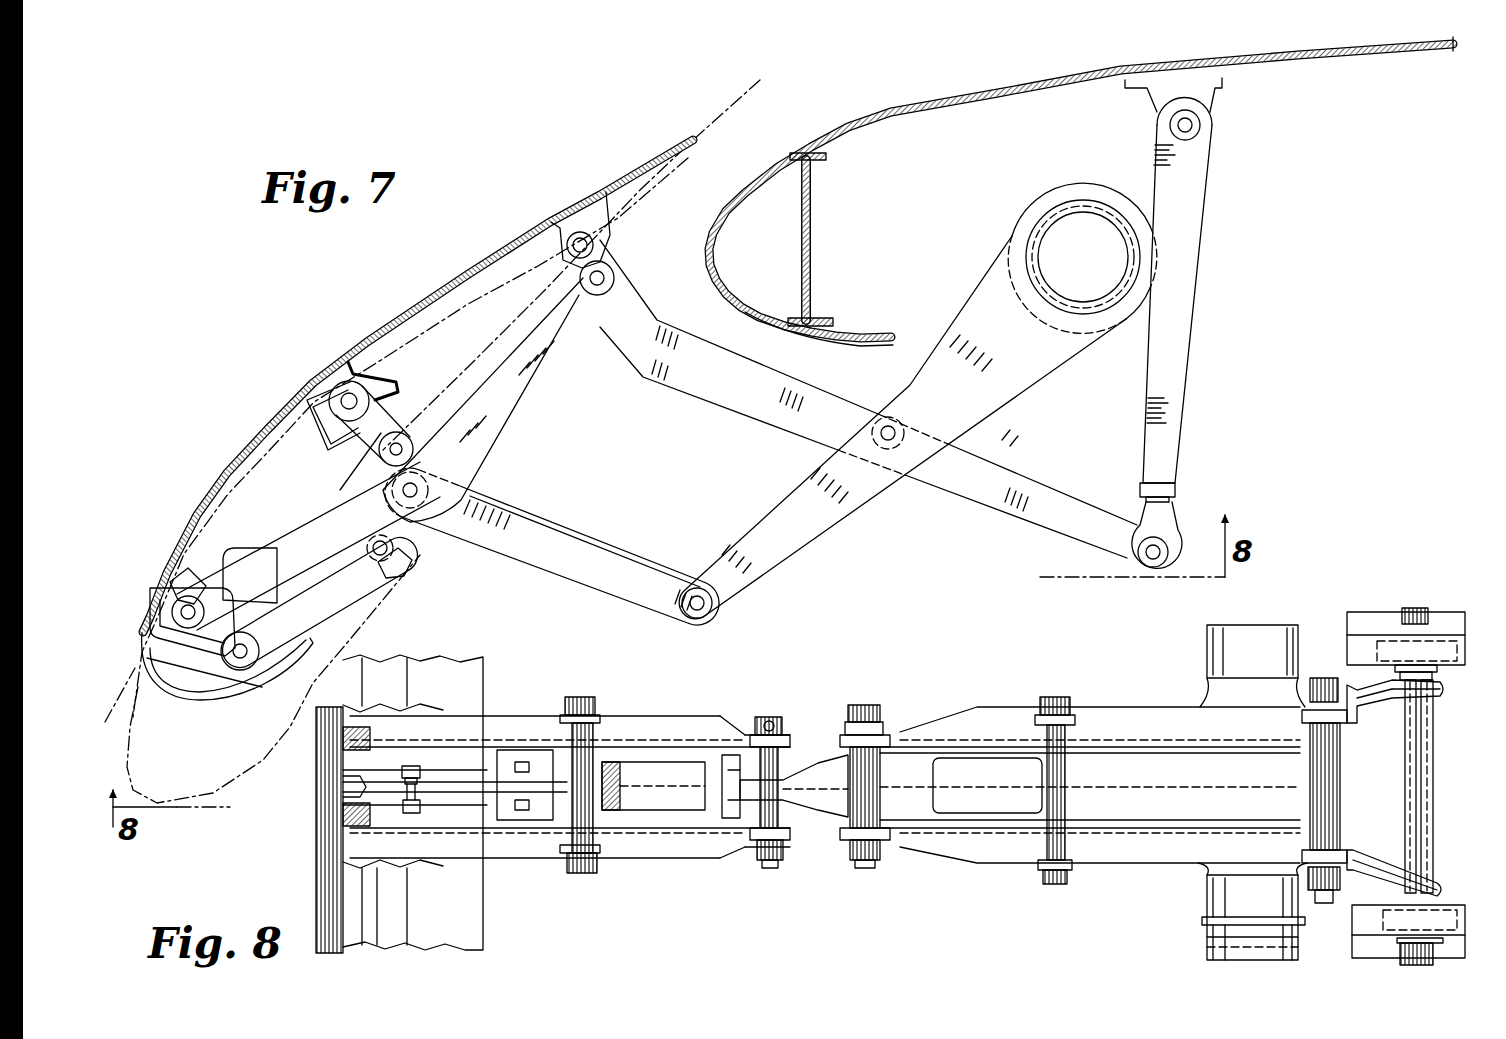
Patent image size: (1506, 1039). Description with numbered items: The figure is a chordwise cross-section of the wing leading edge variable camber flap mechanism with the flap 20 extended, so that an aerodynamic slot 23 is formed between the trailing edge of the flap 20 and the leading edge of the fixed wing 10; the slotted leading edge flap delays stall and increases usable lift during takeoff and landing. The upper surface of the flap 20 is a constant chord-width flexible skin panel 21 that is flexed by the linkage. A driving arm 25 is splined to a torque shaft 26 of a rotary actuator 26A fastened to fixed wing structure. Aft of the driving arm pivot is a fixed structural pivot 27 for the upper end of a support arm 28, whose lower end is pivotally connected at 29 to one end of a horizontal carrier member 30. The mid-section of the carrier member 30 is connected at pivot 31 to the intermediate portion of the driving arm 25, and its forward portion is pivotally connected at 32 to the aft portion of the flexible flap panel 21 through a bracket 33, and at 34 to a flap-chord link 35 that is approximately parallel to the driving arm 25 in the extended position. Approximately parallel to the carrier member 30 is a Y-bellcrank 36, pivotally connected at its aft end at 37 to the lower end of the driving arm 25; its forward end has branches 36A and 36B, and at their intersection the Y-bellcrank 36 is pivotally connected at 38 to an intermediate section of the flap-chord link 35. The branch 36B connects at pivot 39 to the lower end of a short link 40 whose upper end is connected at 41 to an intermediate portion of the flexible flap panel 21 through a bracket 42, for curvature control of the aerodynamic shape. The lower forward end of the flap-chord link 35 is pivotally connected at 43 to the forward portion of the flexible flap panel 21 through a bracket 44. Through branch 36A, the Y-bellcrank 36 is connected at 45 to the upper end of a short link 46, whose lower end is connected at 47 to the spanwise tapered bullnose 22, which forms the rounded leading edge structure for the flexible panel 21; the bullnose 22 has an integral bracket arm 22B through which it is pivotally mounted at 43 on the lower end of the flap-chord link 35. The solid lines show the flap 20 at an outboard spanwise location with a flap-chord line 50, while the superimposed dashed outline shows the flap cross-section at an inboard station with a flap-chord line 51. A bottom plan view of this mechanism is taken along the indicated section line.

In FIG. 7, the fixed wing 10 is at (1143, 68).
In FIG. 7, the flap 20 is at (278, 378).
In FIG. 7, the flexible skin panel 21 is at (372, 330).
In FIG. 7, the bullnose 22 is at (185, 682).
In FIG. 8, the bullnose 22 is at (350, 897).
In FIG. 7, the bracket arm 22B is at (295, 559).
In FIG. 8, the bracket arm 22B is at (345, 786).
In FIG. 7, the aerodynamic slot 23 is at (750, 126).
In FIG. 7, the driving arm 25 is at (987, 318).
In FIG. 8, the driving arm 25 is at (1177, 706).
In FIG. 7, the torque shaft 26 is at (1098, 273).
In FIG. 8, the torque shaft 26 is at (1240, 623).
In FIG. 7, the rotary actuator 26A is at (1056, 186).
In FIG. 7, the fixed structural pivot 27 is at (1168, 125).
In FIG. 8, the fixed structural pivot 27 is at (1412, 606).
In FIG. 7, the support arm 28 is at (1160, 160).
In FIG. 8, the support arm 28 is at (1370, 850).
In FIG. 7, the pivot 29 is at (1170, 553).
In FIG. 8, the pivot 29 is at (1320, 676).
In FIG. 7, the carrier member 30 is at (1032, 520).
In FIG. 8, the carrier member 30 is at (1140, 760).
In FIG. 7, the pivot 31 is at (890, 450).
In FIG. 8, the pivot 31 is at (1056, 697).
In FIG. 7, the pivot 32 is at (593, 246).
In FIG. 8, the pivot 32 is at (760, 722).
In FIG. 7, the bracket 33 is at (600, 192).
In FIG. 8, the bracket 33 is at (728, 755).
In FIG. 7, the pivot 34 is at (614, 278).
In FIG. 8, the pivot 34 is at (772, 718).
In FIG. 7, the flap-chord link 35 is at (513, 410).
In FIG. 8, the flap-chord link 35 is at (655, 716).
In FIG. 7, the Y-bellcrank 36 is at (560, 580).
In FIG. 8, the Y-bellcrank 36 is at (665, 767).
In FIG. 7, the branch 36A is at (395, 550).
In FIG. 7, the branch 36B is at (428, 440).
In FIG. 7, the pivot 37 is at (697, 586).
In FIG. 8, the pivot 37 is at (866, 705).
In FIG. 7, the pivot 38 is at (430, 488).
In FIG. 8, the pivot 38 is at (588, 700).
In FIG. 7, the pivot 39 is at (379, 456).
In FIG. 7, the short link 40 is at (335, 440).
In FIG. 7, the pivot 41 is at (312, 404).
In FIG. 7, the bracket 42 is at (362, 373).
In FIG. 7, the pivot 43 is at (172, 604).
In FIG. 8, the pivot 43 is at (343, 792).
In FIG. 7, the bracket 44 is at (185, 572).
In FIG. 7, the pivot 45 is at (400, 562).
In FIG. 8, the pivot 45 is at (548, 822).
In FIG. 7, the short link 46 is at (343, 592).
In FIG. 8, the short link 46 is at (488, 746).
In FIG. 7, the pivot 47 is at (240, 672).
In FIG. 8, the pivot 47 is at (413, 764).
In FIG. 7, the flap-chord line 50 is at (125, 696).
In FIG. 7, the flap-chord line 51 is at (157, 773).